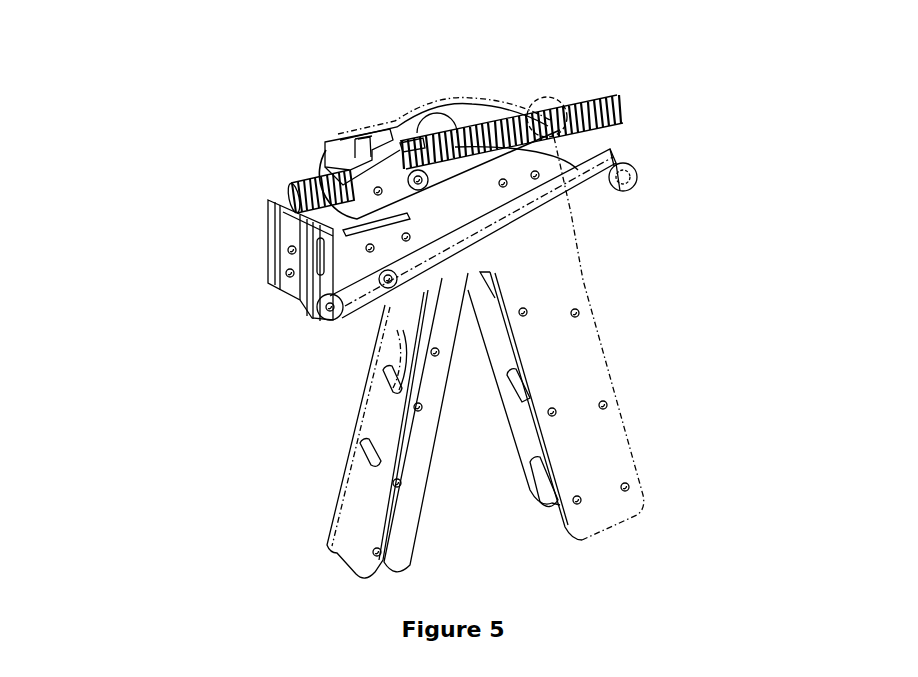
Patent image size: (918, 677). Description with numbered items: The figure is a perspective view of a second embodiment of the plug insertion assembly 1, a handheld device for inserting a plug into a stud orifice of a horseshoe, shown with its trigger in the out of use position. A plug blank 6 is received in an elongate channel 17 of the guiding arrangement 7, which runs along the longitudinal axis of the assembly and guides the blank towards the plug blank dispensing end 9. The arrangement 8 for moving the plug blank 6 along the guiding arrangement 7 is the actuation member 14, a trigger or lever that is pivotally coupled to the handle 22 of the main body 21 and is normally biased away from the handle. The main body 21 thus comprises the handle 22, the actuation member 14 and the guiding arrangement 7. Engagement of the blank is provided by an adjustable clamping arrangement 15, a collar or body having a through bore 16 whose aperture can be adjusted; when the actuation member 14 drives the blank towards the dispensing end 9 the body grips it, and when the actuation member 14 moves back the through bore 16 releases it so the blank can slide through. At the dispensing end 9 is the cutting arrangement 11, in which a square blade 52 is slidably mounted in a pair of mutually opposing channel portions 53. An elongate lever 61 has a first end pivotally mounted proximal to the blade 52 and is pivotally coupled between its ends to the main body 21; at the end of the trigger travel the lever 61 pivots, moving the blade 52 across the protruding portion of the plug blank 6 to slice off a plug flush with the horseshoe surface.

The plug insertion assembly 1 is at (152, 156).
The plug blank 6 is at (538, 127).
The guiding arrangement 7 is at (365, 135).
The moving arrangement 8 is at (370, 157).
The plug blank dispensing end 9 is at (270, 207).
The cutting arrangement 11 is at (600, 167).
The actuation member 14 is at (370, 405).
The adjustable clamping arrangement 15 is at (352, 203).
The through bore 16 is at (352, 170).
The channel 17 is at (403, 132).
The main body 21 is at (568, 352).
The handle 22 is at (514, 397).
The square blade 52 is at (288, 242).
The channel portions 53 is at (273, 232).
The elongate lever 61 is at (552, 195).